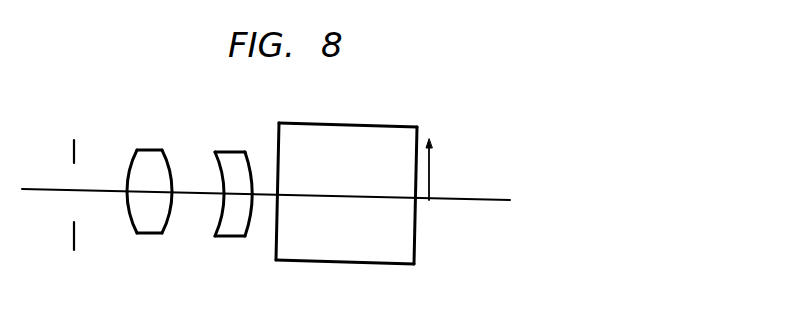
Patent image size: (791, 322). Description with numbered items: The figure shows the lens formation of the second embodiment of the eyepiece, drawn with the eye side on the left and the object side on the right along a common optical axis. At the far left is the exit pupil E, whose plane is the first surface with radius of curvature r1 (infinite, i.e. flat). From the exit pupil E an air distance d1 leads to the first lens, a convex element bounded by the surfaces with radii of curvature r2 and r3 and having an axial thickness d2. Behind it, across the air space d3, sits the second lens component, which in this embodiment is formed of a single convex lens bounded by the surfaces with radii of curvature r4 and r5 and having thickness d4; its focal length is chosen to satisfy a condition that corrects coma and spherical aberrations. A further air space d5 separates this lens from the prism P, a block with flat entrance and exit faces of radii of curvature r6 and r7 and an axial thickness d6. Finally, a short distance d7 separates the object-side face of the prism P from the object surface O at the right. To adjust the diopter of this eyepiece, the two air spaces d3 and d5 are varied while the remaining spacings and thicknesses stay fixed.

The exit pupil E is at (61, 186).
The prism P is at (352, 192).
The object surface O is at (433, 151).
The radius of curvature of first surface r1 is at (72, 243).
The radius of curvature of second surface r2 is at (132, 223).
The radius of curvature of third surface r3 is at (167, 223).
The radius of curvature of fourth surface r4 is at (213, 228).
The radius of curvature of fifth surface r5 is at (248, 228).
The radius of curvature of sixth surface r6 is at (276, 255).
The radius of curvature of seventh surface r7 is at (417, 245).
The axial distance from exit pupil to first lens d1 is at (95, 188).
The thickness of first lens d2 is at (151, 211).
The variable air space between first and second lenses d3 is at (188, 189).
The thickness of second lens d4 is at (231, 217).
The variable air space between second lens and prism d5 is at (265, 193).
The thickness of prism d6 is at (338, 173).
The distance from prism to object surface d7 is at (423, 192).